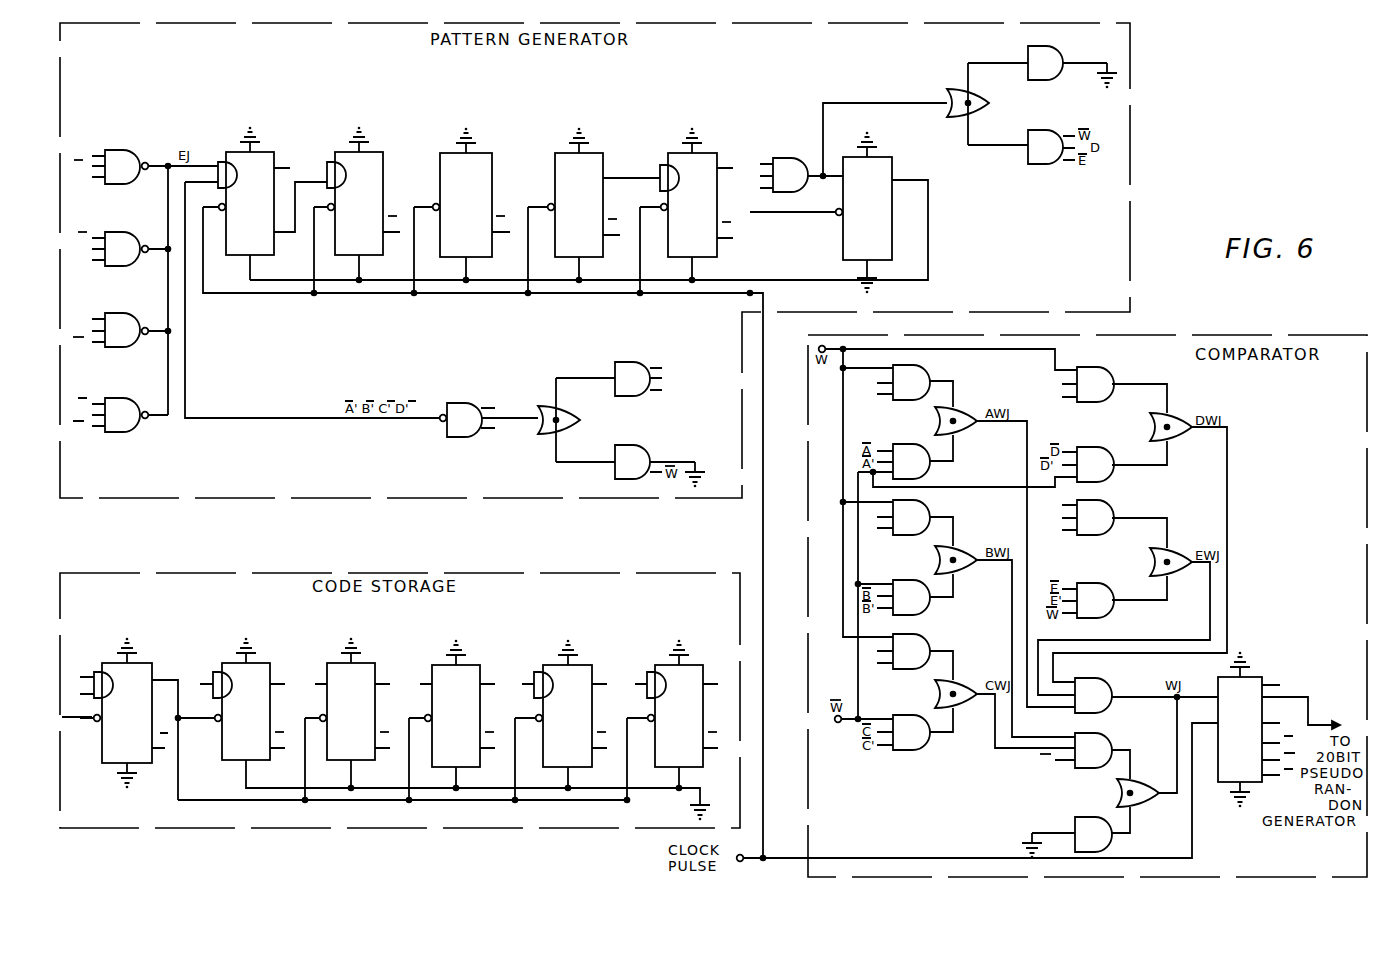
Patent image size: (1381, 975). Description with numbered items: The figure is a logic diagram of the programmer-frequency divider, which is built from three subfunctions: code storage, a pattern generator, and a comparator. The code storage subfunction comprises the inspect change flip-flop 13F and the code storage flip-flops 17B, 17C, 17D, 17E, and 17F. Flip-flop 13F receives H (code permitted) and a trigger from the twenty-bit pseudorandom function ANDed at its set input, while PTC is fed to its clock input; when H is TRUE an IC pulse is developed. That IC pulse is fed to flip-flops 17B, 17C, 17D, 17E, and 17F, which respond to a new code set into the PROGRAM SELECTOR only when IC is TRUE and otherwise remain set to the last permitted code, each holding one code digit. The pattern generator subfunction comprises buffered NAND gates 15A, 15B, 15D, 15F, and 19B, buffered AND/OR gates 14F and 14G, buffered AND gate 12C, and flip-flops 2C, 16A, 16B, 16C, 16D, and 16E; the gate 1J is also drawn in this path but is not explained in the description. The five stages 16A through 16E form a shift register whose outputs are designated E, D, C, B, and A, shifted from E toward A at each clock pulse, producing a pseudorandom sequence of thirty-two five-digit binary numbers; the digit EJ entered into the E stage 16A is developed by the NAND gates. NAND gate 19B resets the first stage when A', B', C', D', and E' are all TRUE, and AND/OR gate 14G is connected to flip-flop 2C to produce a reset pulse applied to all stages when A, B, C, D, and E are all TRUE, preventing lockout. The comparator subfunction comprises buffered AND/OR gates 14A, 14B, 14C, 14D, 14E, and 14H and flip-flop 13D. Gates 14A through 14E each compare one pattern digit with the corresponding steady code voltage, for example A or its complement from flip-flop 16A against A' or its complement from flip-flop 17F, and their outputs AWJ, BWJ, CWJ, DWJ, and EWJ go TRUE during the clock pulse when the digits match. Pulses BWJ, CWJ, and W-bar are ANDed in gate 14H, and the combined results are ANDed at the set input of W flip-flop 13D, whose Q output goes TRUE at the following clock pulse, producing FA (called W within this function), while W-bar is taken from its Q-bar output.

The buffered NAND gate 15A is at (120, 167).
The buffered NAND gate 15B is at (120, 250).
The buffered NAND gate 15D is at (120, 331).
The buffered NAND gate 15F is at (120, 416).
The flip-flop 16A is at (272, 203).
The flip-flop 16B is at (355, 212).
The flip-flop 16C is at (460, 212).
The flip-flop 16D is at (592, 212).
The flip-flop 16E is at (685, 212).
The buffered AND gate 12C is at (846, 149).
The flip-flop 2C is at (821, 213).
The OR gate 1J is at (947, 104).
The buffered AND/OR gate 14G is at (1042, 67).
The buffered NAND gate 19B is at (491, 418).
The buffered AND/OR gate 14F is at (608, 410).
The inspect change flip-flop 13F is at (139, 719).
The code storage flip-flop 17B is at (451, 729).
The code storage flip-flop 17C is at (348, 721).
The code storage flip-flop 17D is at (452, 722).
The code storage flip-flop 17E is at (561, 722).
The code storage flip-flop 17F is at (672, 722).
The buffered AND/OR gate 14A is at (911, 386).
The buffered AND/OR gate 14B is at (911, 523).
The buffered AND/OR gate 14C is at (911, 657).
The buffered AND/OR gate 14D is at (1107, 390).
The buffered AND/OR gate 14E is at (1106, 522).
The buffered AND/OR gate 14H is at (1090, 754).
The W flip-flop 13D is at (1279, 730).